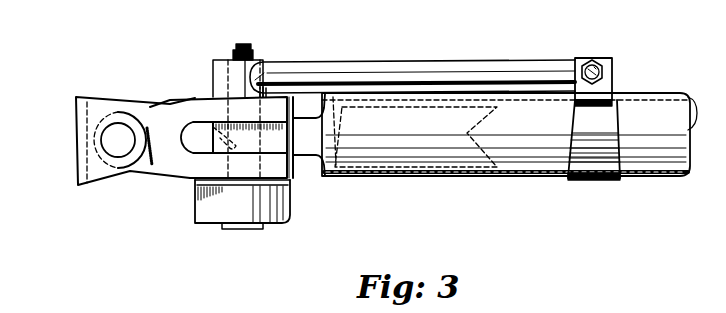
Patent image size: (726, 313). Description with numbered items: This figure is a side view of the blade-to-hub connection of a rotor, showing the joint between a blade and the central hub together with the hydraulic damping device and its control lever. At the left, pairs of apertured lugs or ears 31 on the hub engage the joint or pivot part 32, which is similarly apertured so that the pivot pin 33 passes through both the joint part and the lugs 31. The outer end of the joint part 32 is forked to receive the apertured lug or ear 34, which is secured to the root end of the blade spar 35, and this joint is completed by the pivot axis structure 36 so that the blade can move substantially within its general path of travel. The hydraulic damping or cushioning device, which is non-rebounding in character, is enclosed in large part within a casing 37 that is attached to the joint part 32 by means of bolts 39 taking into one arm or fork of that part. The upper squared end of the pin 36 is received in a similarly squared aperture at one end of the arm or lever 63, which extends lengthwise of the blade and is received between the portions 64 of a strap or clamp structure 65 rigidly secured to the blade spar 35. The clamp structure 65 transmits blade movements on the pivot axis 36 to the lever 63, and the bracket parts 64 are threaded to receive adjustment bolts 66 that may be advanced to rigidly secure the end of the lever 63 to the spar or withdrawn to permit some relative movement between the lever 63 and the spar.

The apertured lugs or ears 31 is at (92, 108).
The joint or pivot part 32 is at (172, 170).
The pivot pin 33 is at (118, 130).
The apertured lug or ear 34 is at (297, 143).
The blade spar 35 is at (398, 143).
The pivot axis structure 36 is at (213, 127).
The casing 37 is at (220, 203).
The bolts 39 is at (193, 190).
The arm or lever 63 is at (387, 68).
The portions of strap or clamp structure 64 is at (608, 88).
The strap or clamp structure 65 is at (597, 140).
The adjustment bolts 66 is at (602, 65).